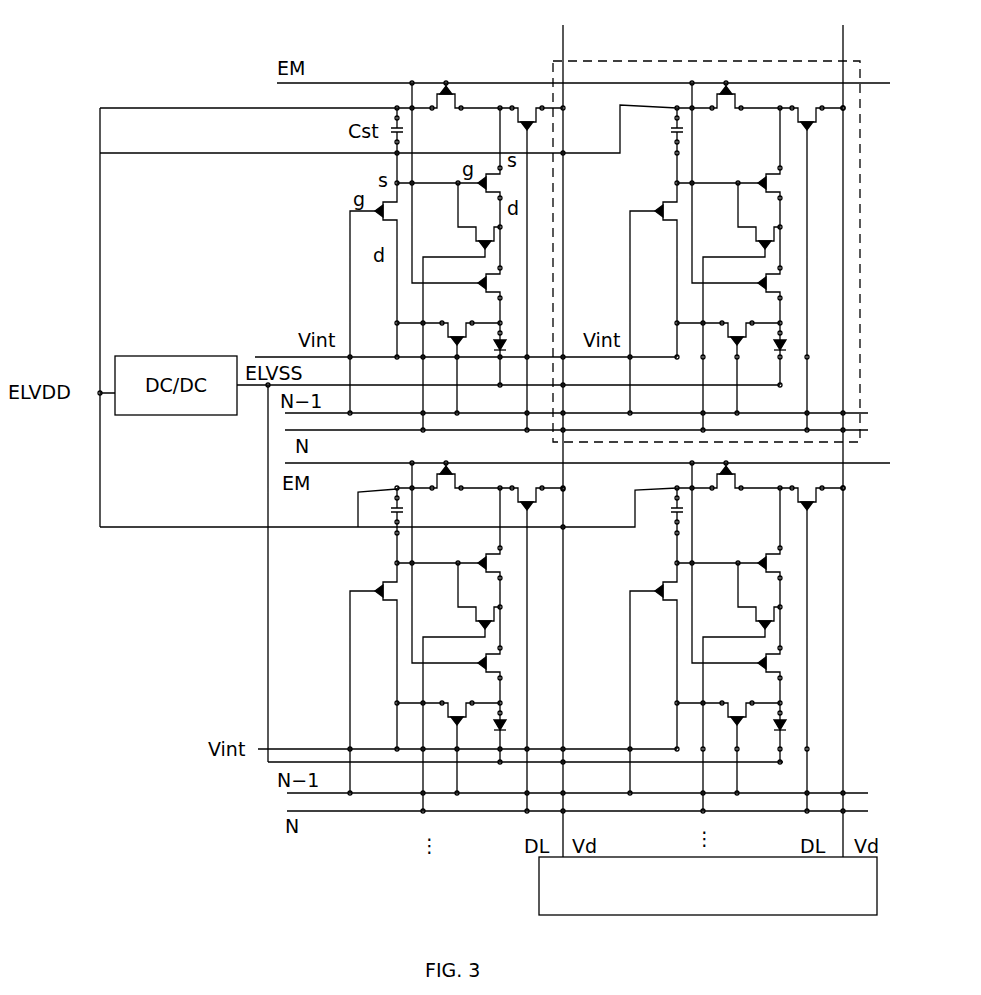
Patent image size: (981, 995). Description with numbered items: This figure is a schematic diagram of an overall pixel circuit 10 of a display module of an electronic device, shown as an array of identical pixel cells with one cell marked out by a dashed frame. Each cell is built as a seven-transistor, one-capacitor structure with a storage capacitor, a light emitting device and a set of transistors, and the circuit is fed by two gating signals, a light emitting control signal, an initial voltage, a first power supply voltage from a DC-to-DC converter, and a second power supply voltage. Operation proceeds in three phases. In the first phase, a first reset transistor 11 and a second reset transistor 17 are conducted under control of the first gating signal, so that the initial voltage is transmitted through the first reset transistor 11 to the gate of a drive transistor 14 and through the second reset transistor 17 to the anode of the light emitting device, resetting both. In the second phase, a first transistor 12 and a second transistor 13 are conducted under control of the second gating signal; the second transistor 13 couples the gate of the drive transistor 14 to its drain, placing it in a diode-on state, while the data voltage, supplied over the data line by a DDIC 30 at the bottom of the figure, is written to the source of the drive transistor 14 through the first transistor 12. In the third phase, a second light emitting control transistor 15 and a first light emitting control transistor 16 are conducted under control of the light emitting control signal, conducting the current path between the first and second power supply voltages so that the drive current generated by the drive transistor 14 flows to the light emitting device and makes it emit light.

The pixel circuit 10 is at (860, 238).
The first reset transistor 11 is at (383, 221).
The first transistor 12 is at (527, 108).
The second transistor 13 is at (485, 228).
The drive transistor 14 is at (502, 183).
The second light emitting control transistor 15 is at (502, 283).
The first light emitting control transistor 16 is at (446, 111).
The second reset transistor 17 is at (457, 322).
The DDIC 30 is at (877, 887).